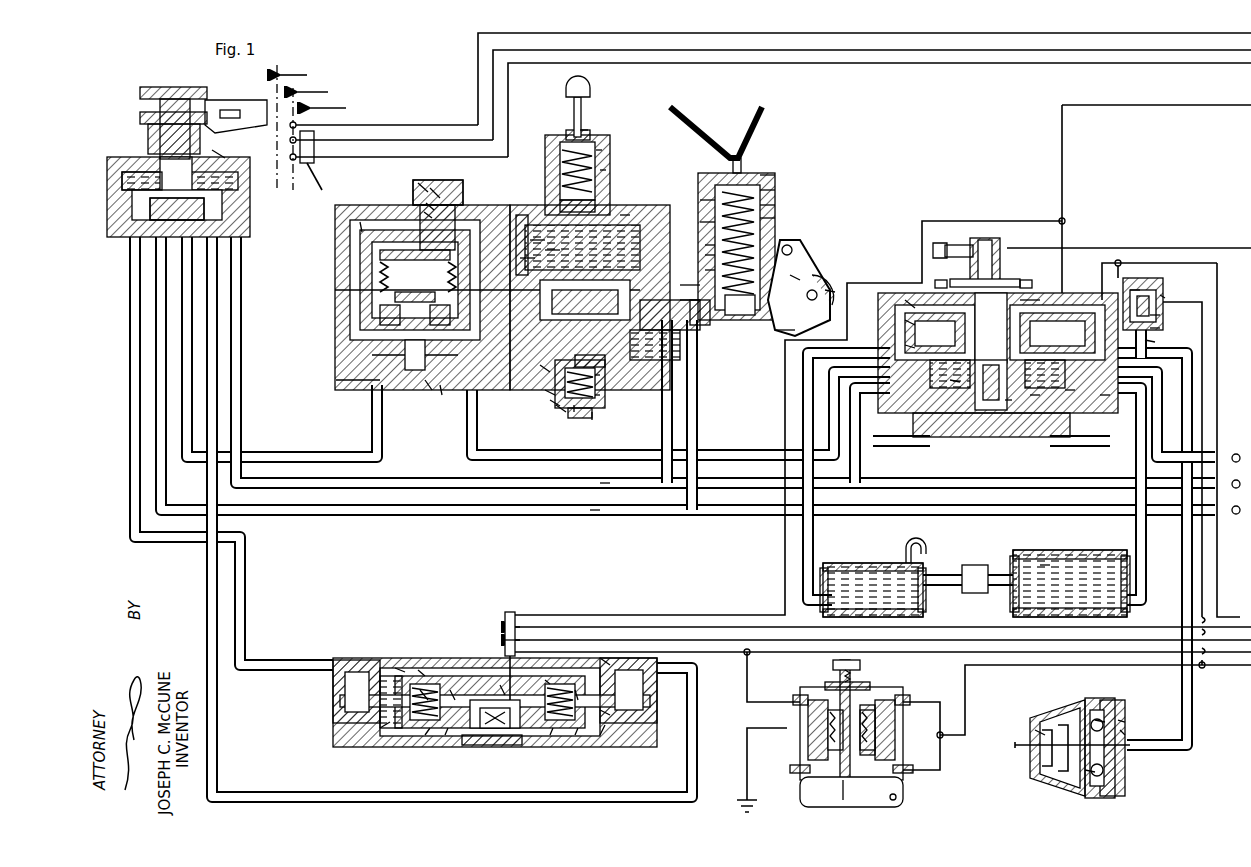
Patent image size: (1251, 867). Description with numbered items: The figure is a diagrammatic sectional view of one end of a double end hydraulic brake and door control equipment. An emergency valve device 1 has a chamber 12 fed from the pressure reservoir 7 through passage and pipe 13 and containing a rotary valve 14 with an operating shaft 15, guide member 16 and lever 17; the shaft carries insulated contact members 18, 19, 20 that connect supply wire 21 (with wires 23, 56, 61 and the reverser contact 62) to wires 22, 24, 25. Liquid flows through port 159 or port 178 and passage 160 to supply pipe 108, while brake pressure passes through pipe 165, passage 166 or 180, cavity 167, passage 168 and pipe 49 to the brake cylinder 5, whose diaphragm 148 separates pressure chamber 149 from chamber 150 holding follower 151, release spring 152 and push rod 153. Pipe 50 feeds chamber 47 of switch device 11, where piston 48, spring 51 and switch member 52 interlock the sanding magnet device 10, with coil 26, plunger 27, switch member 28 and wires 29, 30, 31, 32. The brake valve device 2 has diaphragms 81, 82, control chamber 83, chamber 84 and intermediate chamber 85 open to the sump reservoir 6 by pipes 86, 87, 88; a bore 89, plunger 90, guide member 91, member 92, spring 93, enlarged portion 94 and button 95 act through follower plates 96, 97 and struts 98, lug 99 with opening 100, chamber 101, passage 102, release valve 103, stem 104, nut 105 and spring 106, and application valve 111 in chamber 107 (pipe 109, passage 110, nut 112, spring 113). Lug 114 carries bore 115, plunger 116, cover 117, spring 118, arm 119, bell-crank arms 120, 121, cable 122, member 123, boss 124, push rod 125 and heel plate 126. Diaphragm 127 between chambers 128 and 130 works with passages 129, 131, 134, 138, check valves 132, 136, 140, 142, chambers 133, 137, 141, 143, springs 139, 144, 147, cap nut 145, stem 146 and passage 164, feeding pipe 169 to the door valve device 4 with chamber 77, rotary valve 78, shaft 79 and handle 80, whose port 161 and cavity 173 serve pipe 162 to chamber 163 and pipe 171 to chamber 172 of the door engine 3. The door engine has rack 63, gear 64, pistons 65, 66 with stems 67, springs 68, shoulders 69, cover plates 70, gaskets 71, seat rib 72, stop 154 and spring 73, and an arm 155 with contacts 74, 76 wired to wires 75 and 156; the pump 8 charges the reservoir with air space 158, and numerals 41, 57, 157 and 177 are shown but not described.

The emergency valve device 1 is at (987, 415).
The foot controlled brake valve device 2 is at (540, 200).
The door engine 3 is at (465, 658).
The hand operated door valve device 4 is at (112, 152).
The brake cylinder 5 is at (1056, 720).
The sump reservoir 6 is at (875, 561).
The pressure reservoir 7 is at (1082, 559).
The reversible pump 8 is at (962, 570).
The sanding magnet device 10 is at (905, 778).
The switch device 11 is at (1170, 300).
The chamber 12 is at (1035, 395).
The passage and pipe 13 is at (1105, 395).
The rotary valve 14 is at (1070, 392).
The operating shaft 15 is at (992, 262).
The guide member 16 is at (1010, 400).
The operating lever 17 is at (966, 244).
The contact member 18 is at (960, 283).
The contact member 19 is at (985, 280).
The contact member 20 is at (1008, 282).
The supply wire 21 is at (1062, 200).
The wire 22 is at (880, 283).
The wire 23 is at (1065, 223).
The wire 24 is at (1118, 280).
The wire 25 is at (1228, 615).
The operating coil 26 is at (875, 724).
The plunger 27 is at (840, 792).
The switch member 28 is at (868, 684).
The wire 29 is at (1212, 665).
The wire 30 is at (747, 760).
The wire 31 is at (690, 650).
The wire 32 is at (920, 702).
The base 41 is at (898, 792).
The piston chamber 47 is at (1160, 328).
The piston 48 is at (1160, 315).
The brake cylinder pipe 49 is at (1178, 600).
The pipe 50 is at (1155, 342).
The coiled spring 51 is at (1136, 288).
The switch member 52 is at (1165, 295).
The wire 56 is at (950, 50).
The wire 57 is at (950, 34).
The wire 61 is at (895, 66).
The controller reverser movable contact 62 is at (310, 165).
The movable rack 63 is at (500, 685).
The gear 64 is at (490, 730).
The door closing piston 65 is at (395, 668).
The door opening piston 66 is at (605, 712).
The stem 67 is at (450, 690).
The spring 68 is at (445, 735).
The shoulder 69 is at (425, 735).
The apertured cover plate 70 is at (420, 690).
The gasket 71 is at (380, 728).
The seat rib 72 is at (418, 670).
The spring 73 is at (340, 700).
The contact 74 is at (513, 612).
The wire 75 is at (655, 640).
The contact 76 is at (505, 640).
The chamber 77 is at (125, 177).
The rotary valve 78 is at (140, 190).
The shaft 79 is at (152, 108).
The manually operable handle 80 is at (220, 104).
The flexible diaphragm 81 is at (705, 180).
The flexible diaphragm 82 is at (600, 377).
The control chamber 83 is at (610, 190).
The chamber 84 is at (600, 397).
The intermediate chamber 85 is at (700, 222).
The pipe 86 is at (672, 376).
The pipe 87 is at (590, 513).
The pipe 88 is at (812, 555).
The bore 89 is at (550, 172).
The plunger 90 is at (605, 170).
The hollow guide member 91 is at (600, 150).
The movable member 92 is at (574, 112).
The brake control spring 93 is at (566, 135).
The enlarged portion 94 is at (590, 128).
The button 95 is at (566, 88).
The follower plate 96 is at (598, 410).
The follower plate 97 is at (700, 200).
The struts 98 is at (522, 210).
The lug 99 is at (705, 245).
The through opening 100 is at (545, 250).
The chamber 101 is at (705, 256).
The passage 102 is at (530, 240).
The brake release valve 103 is at (680, 300).
The fluted stem 104 is at (602, 362).
The screw-threaded nut 105 is at (627, 210).
The spring 106 is at (680, 285).
The chamber 107 is at (580, 420).
The pressure supply pipe 108 is at (600, 481).
The connecting pipe 109 is at (697, 408).
The passage 110 is at (700, 325).
The brake application valve 111 is at (594, 420).
The nut 112 is at (560, 420).
The spring 113 is at (574, 412).
The lug 114 is at (705, 270).
The through bore 115 is at (770, 205).
The plunger 116 is at (760, 280).
The cover 117 is at (770, 190).
The spring 118 is at (770, 218).
The arm 119 is at (825, 290).
The arm 120 is at (790, 330).
The arm 121 is at (790, 275).
The flexible cable 122 is at (920, 250).
The member 123 is at (938, 248).
The boss 124 is at (795, 246).
The push rod 125 is at (770, 180).
The heel plate 126 is at (735, 150).
The flexible diaphragm 127 is at (345, 285).
The chamber 128 is at (395, 250).
The passage 129 is at (520, 258).
The chamber 130 is at (385, 318).
The passage 131 is at (432, 320).
The check valve 132 is at (436, 400).
The chamber 133 is at (460, 385).
The passage 134 is at (545, 372).
The check valve 136 is at (430, 385).
The chamber 137 is at (405, 362).
The passage 138 is at (395, 296).
The spring 139 is at (372, 358).
The check valve 140 is at (360, 225).
The chamber 141 is at (425, 212).
The check valve 142 is at (428, 205).
The chamber 143 is at (448, 188).
The spring 144 is at (418, 183).
The cap nut 145 is at (432, 190).
The stem 146 is at (445, 275).
The spring 147 is at (380, 262).
The flexible diaphragm 148 is at (1098, 720).
The pressure chamber 149 is at (1118, 720).
The non-pressure chamber 150 is at (1085, 770).
The diaphragm follower 151 is at (1120, 730).
The brake release spring 152 is at (1035, 730).
The push rod 153 is at (1020, 750).
The stop 154 is at (555, 410).
The arm 155 is at (505, 622).
The wire 156 is at (770, 625).
The vent pipe 157 is at (928, 542).
The space 158 is at (1045, 560).
The port 159 is at (955, 380).
The passage 160 is at (905, 320).
The port 161 is at (140, 193).
The pipe 162 is at (133, 262).
The door closing piston chamber 163 is at (365, 662).
The passage 164 is at (550, 395).
The pipe 165 is at (535, 455).
The passage 166 is at (905, 345).
The cavity 167 is at (900, 441).
The passage 168 is at (1030, 300).
The passage and pipe 169 is at (360, 390).
The door opening pipe 171 is at (212, 250).
The door opening piston chamber 172 is at (605, 658).
The cavity 173 is at (212, 120).
The chamber 177 is at (905, 300).
The port 178 is at (805, 392).
The passage 180 is at (1118, 456).